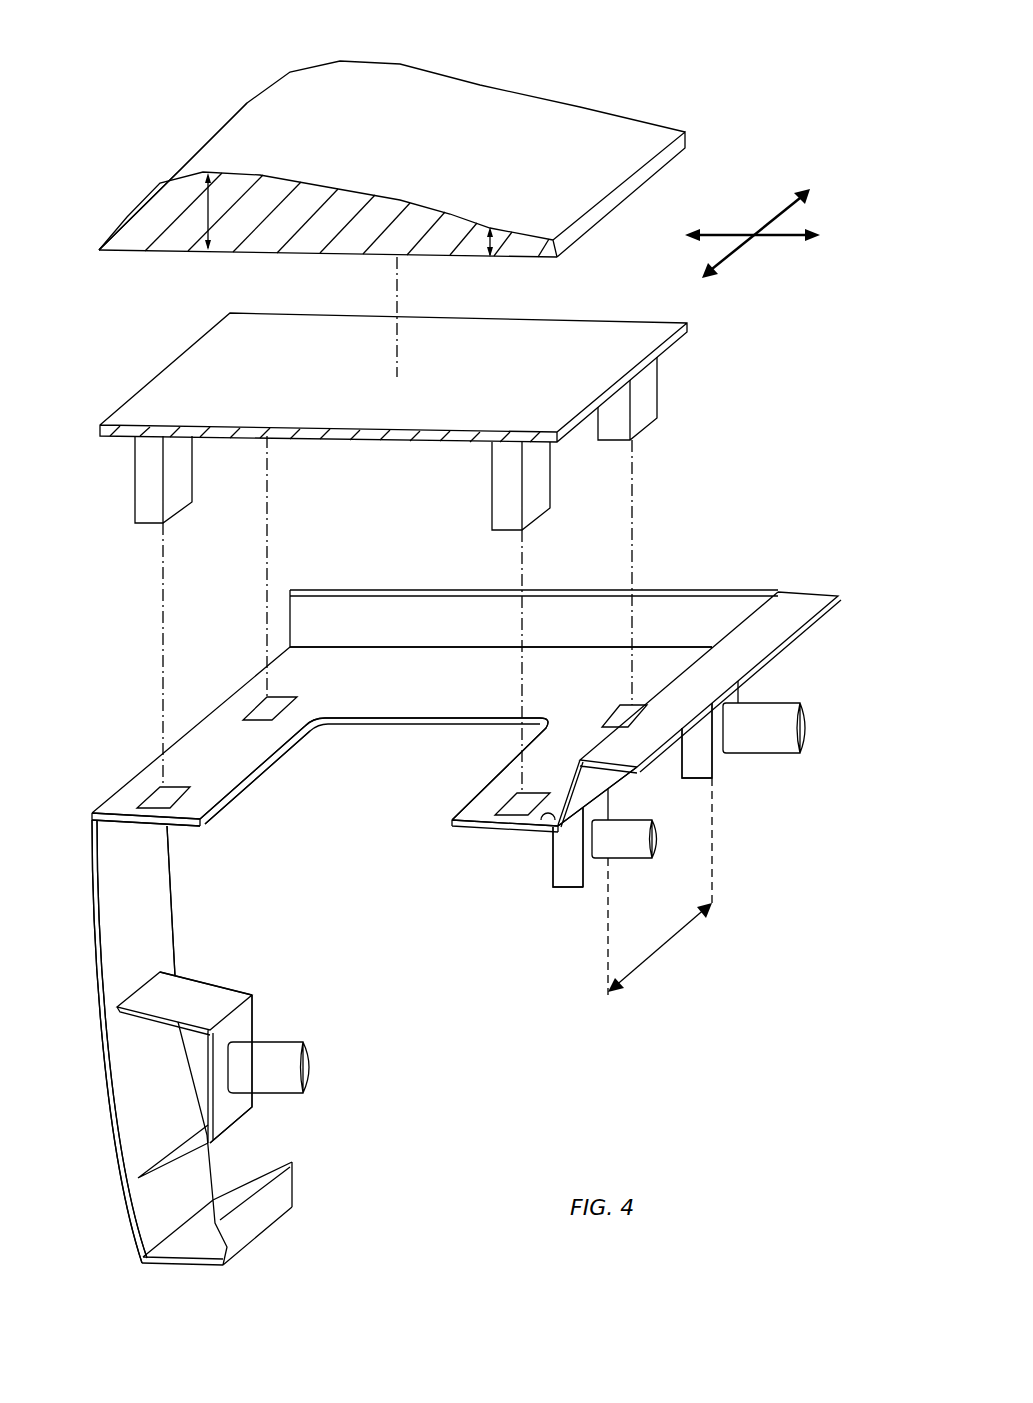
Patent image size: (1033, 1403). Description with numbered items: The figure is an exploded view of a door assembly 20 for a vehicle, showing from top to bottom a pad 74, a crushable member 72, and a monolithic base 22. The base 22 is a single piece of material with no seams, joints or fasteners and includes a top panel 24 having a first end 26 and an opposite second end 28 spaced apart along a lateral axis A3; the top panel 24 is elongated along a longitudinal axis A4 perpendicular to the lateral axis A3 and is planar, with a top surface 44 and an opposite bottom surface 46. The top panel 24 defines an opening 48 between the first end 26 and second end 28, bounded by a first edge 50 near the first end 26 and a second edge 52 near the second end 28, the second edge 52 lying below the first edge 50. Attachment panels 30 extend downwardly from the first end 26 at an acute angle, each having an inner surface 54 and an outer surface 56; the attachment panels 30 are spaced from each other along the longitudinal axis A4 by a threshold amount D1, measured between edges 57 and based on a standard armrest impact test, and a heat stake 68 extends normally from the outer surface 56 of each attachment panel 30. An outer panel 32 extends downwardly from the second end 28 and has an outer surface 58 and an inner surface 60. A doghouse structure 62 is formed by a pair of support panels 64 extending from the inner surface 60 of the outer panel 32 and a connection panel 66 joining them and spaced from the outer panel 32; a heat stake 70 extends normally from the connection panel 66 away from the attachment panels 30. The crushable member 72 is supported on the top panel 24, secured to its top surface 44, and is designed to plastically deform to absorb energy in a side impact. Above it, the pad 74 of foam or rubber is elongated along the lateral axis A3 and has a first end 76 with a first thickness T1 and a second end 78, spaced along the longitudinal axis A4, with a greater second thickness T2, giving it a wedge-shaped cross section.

The door assembly 20 is at (92, 108).
The monolithic base 22 is at (393, 700).
The top panel 24 is at (255, 742).
The first end 26 is at (550, 817).
The second end 28 is at (115, 792).
The attachment panel 30 is at (703, 763).
The outer panel 32 is at (92, 947).
The top surface 44 is at (469, 694).
The bottom surface 46 is at (472, 723).
The opening 48 is at (398, 774).
The first edge 50 is at (465, 807).
The second edge 52 is at (243, 787).
The inner surface 54 is at (682, 770).
The outer surface 56 is at (720, 758).
The edge 57 is at (712, 733).
The outer surface 58 is at (90, 883).
The inner surface 60 is at (146, 912).
The doghouse structure 62 is at (243, 995).
The support panel 64 is at (187, 990).
The connection panel 66 is at (232, 1105).
The heat stake 68 is at (788, 742).
The heat stake 70 is at (290, 1047).
The crushable member 72 is at (210, 375).
The pad 74 is at (420, 92).
The first end 76 is at (658, 138).
The second end 78 is at (258, 128).
The first thickness T1 is at (492, 240).
The second thickness T2 is at (208, 211).
The lateral axis A3 is at (732, 232).
The longitudinal axis A4 is at (772, 210).
The threshold amount D1 is at (660, 886).